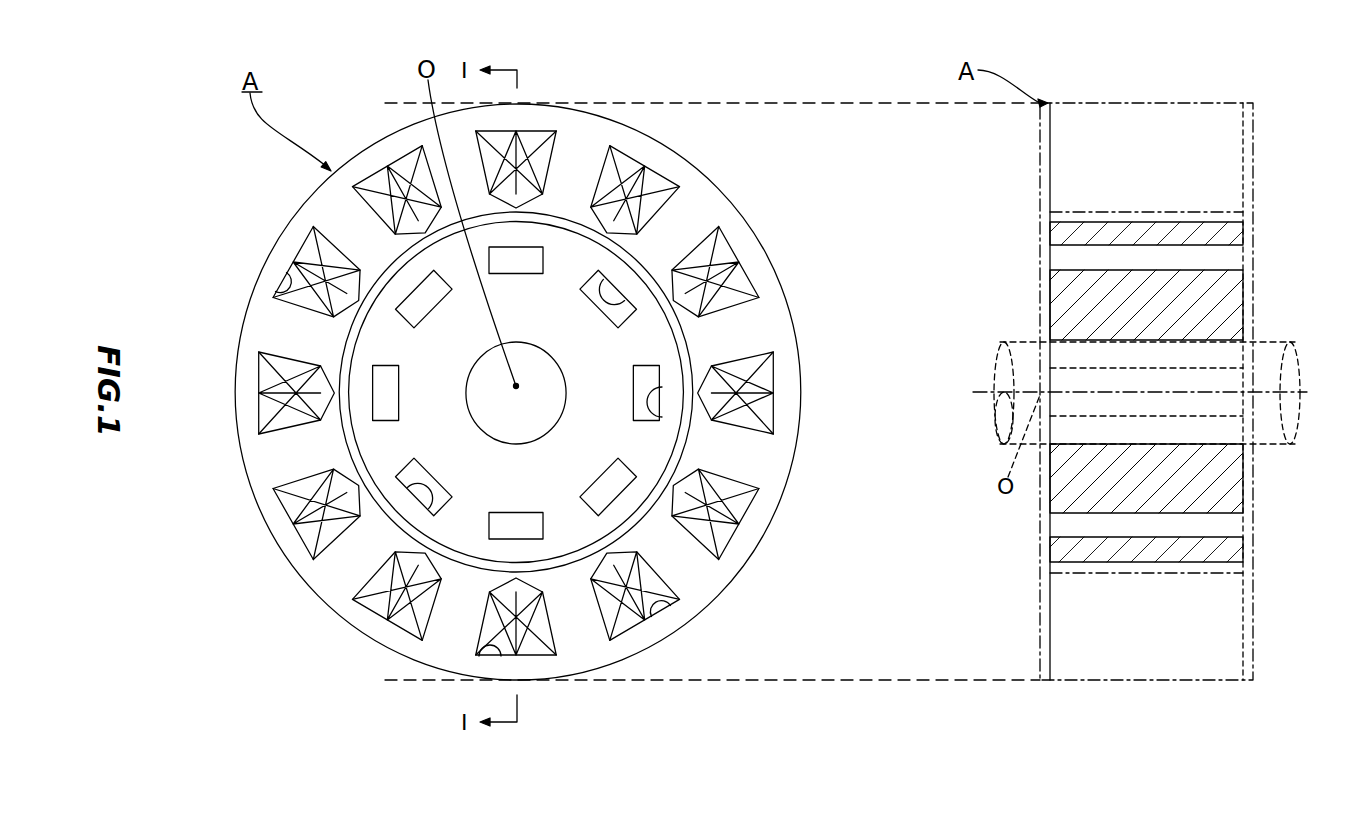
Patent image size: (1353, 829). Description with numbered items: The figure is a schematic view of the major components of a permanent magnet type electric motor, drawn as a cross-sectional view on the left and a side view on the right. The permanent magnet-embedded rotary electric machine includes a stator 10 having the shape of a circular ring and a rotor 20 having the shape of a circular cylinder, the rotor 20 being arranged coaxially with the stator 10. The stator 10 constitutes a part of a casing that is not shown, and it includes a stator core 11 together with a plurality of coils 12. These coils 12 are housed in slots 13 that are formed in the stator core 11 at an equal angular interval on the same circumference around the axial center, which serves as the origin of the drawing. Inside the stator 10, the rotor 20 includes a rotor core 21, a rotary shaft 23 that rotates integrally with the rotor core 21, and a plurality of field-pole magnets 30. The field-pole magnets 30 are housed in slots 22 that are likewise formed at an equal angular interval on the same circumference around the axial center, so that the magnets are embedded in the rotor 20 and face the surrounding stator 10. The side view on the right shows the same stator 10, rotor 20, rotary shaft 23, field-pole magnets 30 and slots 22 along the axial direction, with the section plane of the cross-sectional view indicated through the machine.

The stator 10 is at (700, 618).
The stator core 11 is at (377, 158).
The coils 12 is at (310, 248).
The slots 13 is at (286, 272).
The rotor 20 is at (343, 349).
The rotor core 21 is at (567, 250).
The slots 22 is at (603, 279).
The rotary shaft 23 is at (505, 425).
The field-pole magnets 30 is at (623, 303).